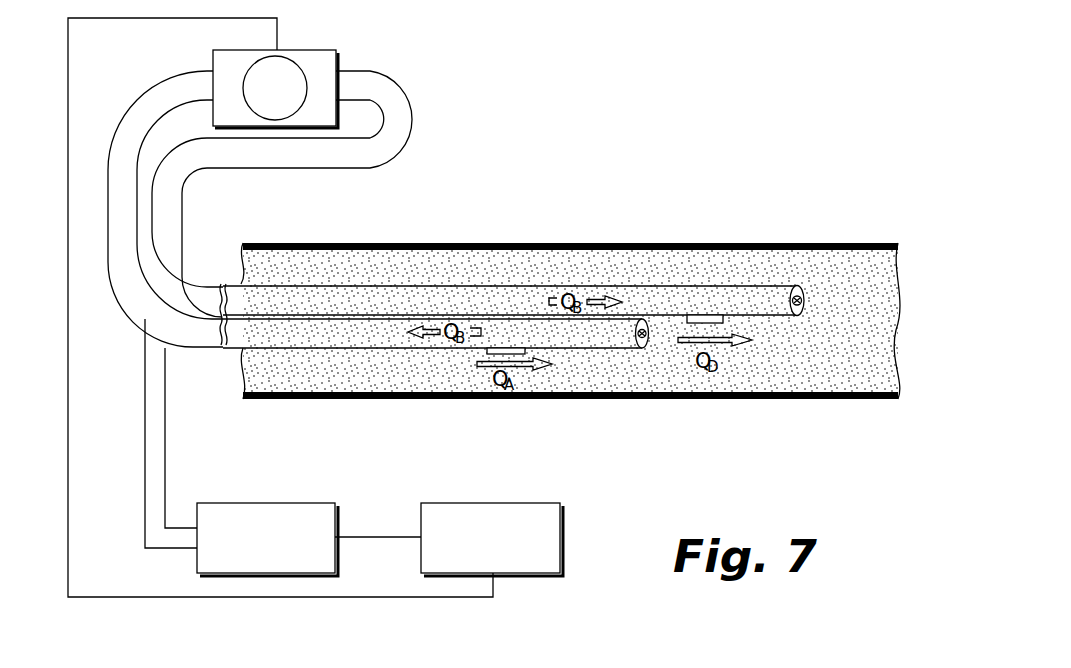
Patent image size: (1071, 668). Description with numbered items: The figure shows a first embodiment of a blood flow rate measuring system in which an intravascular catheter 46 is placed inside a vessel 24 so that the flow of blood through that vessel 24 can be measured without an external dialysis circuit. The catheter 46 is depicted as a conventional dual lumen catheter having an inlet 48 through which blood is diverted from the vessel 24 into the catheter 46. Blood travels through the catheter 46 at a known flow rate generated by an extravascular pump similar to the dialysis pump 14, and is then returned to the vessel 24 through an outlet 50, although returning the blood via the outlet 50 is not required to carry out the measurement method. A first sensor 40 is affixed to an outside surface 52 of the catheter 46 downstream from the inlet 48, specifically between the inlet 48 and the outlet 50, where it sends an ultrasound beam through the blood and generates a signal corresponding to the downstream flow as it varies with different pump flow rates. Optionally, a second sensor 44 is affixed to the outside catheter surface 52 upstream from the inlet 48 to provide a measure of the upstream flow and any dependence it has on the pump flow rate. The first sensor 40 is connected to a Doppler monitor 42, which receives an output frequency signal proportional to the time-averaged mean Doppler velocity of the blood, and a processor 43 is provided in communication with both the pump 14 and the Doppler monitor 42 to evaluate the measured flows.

The pump 14 is at (298, 50).
The vessel 24 is at (263, 372).
The first sensor 40 is at (710, 323).
The Doppler monitor 42 is at (302, 503).
The processor 43 is at (498, 503).
The second sensor 44 is at (515, 354).
The intravascular catheter 46 is at (401, 272).
The inlet 48 is at (648, 343).
The outlet 50 is at (802, 287).
The outside surface 52 is at (348, 348).